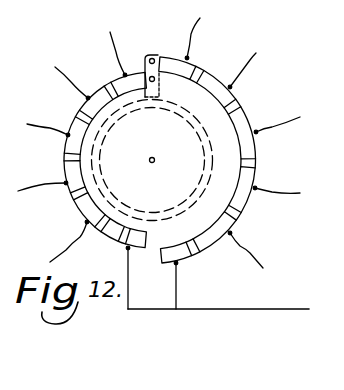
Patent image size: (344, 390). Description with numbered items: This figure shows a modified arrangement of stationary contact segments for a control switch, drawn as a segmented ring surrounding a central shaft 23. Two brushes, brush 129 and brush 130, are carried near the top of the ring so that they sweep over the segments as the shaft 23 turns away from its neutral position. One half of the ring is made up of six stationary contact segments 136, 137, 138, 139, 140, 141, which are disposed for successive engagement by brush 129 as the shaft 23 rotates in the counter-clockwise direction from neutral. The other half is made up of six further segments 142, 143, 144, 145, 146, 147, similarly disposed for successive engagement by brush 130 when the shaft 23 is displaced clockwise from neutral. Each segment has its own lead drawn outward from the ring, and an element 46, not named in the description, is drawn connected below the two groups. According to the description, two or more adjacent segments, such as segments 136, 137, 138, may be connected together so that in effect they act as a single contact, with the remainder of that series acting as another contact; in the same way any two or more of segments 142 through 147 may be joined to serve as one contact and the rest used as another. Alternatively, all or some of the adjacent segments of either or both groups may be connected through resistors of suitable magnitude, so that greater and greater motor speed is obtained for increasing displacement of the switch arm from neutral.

The shaft 23 is at (154, 162).
The conductor 46 is at (240, 309).
The brush 129 is at (154, 80).
The brush 130 is at (172, 44).
The stationary contact segment 136 is at (125, 75).
The stationary contact segment 137 is at (88, 98).
The stationary contact segment 138 is at (67, 155).
The stationary contact segment 139 is at (76, 196).
The stationary contact segment 140 is at (88, 224).
The stationary contact segment 141 is at (124, 243).
The stationary contact segment 142 is at (238, 59).
The stationary contact segment 143 is at (287, 90).
The stationary contact segment 144 is at (306, 153).
The stationary contact segment 145 is at (295, 215).
The stationary contact segment 146 is at (284, 248).
The stationary contact segment 147 is at (224, 285).